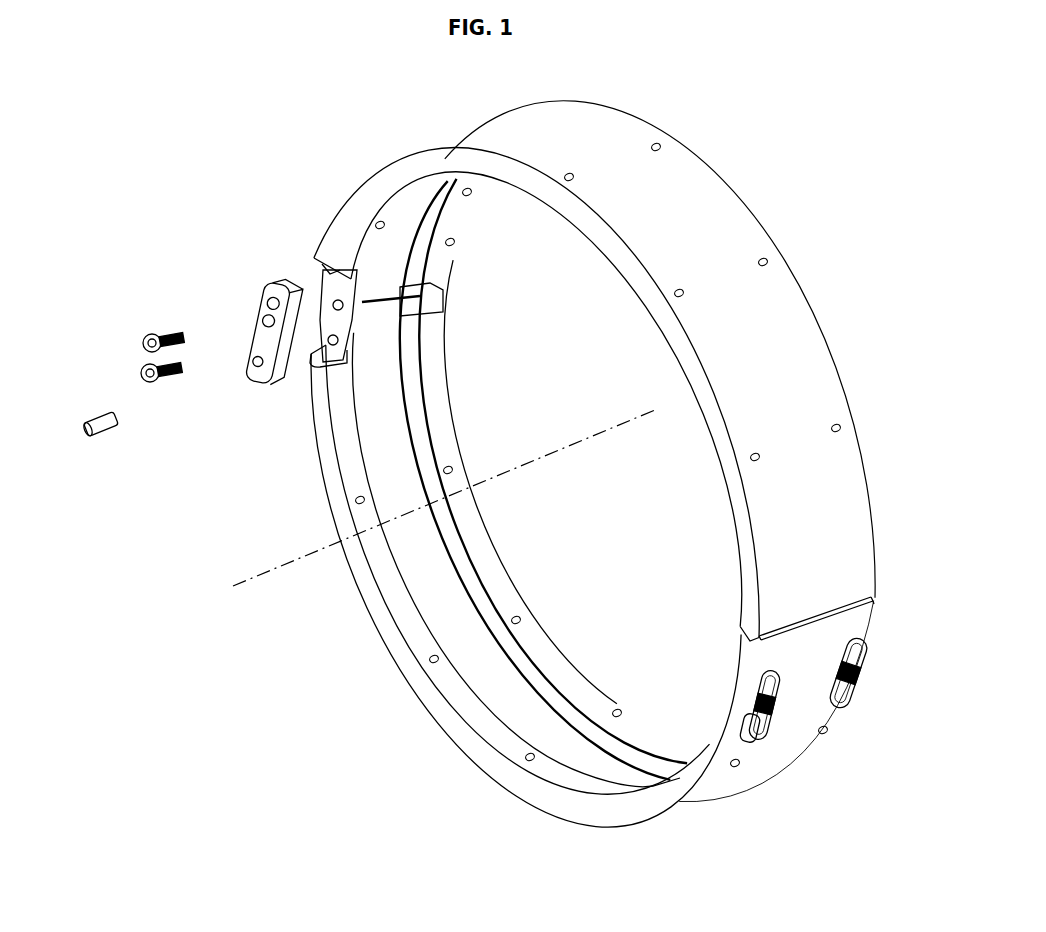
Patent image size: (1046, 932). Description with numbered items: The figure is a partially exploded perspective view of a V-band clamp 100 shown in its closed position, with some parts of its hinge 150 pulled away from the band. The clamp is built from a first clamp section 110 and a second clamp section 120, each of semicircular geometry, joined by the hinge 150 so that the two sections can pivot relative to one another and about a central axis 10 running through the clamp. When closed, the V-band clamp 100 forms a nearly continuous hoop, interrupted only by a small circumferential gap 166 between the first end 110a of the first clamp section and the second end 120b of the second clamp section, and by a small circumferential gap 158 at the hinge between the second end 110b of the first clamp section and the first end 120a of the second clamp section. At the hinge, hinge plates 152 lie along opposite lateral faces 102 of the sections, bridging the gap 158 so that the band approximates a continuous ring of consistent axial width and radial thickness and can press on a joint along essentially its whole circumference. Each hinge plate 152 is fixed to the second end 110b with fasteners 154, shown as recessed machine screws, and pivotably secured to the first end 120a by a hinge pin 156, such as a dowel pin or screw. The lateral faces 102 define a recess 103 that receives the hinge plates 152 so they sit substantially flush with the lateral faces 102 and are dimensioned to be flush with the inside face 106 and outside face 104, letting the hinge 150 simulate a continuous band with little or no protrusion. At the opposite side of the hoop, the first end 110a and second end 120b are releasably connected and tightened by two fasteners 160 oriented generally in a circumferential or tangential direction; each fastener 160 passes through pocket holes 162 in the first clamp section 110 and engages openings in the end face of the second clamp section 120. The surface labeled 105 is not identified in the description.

The V-band clamp 100 is at (157, 146).
The central axis 10 is at (231, 583).
The lateral faces 102 is at (401, 174).
The recess 103 is at (342, 288).
The outside face 104 is at (511, 121).
The inner surface 105 is at (492, 566).
The inside face 106 is at (456, 428).
The first clamp section 110 is at (392, 626).
The first end of the first clamp section 110a is at (750, 653).
The second end of the first clamp section 110b is at (322, 378).
The second clamp section 120 is at (707, 202).
The first end of the second clamp section 120a is at (340, 247).
The second end of the second clamp section 120b is at (855, 573).
The hinge 150 is at (443, 284).
The hinge plates 152 is at (262, 305).
The fasteners 154 is at (146, 367).
The hinge pin 156 is at (101, 421).
The circumferential gap 158 is at (377, 303).
The fasteners 160 is at (851, 688).
The pocket holes 162 is at (757, 734).
The circumferential gap 166 is at (876, 597).